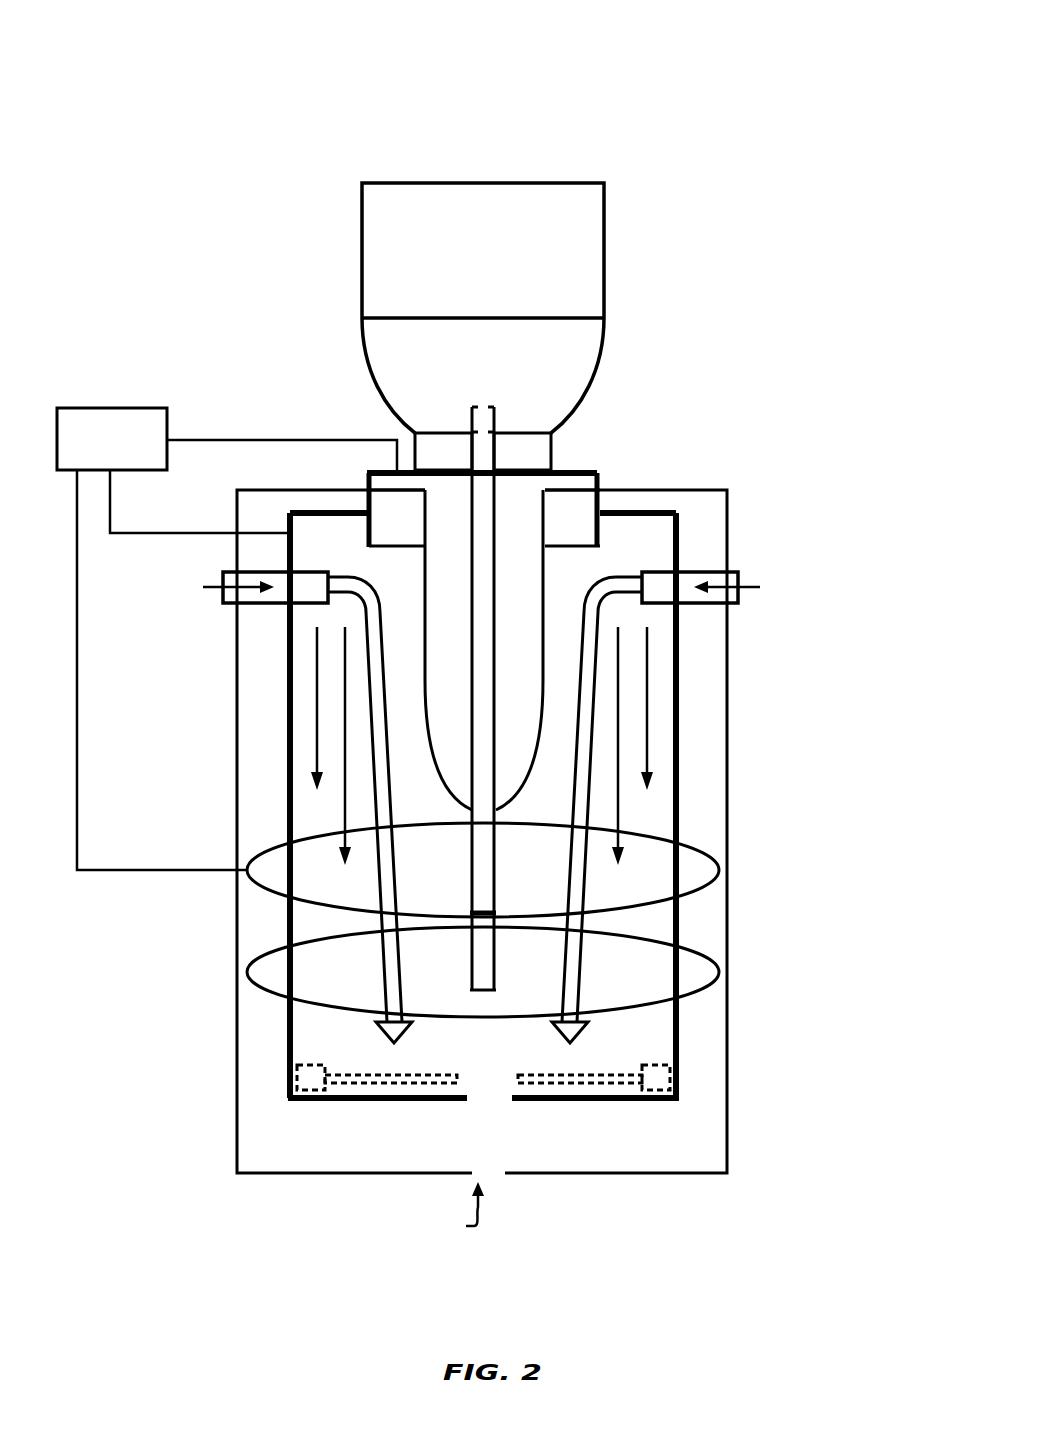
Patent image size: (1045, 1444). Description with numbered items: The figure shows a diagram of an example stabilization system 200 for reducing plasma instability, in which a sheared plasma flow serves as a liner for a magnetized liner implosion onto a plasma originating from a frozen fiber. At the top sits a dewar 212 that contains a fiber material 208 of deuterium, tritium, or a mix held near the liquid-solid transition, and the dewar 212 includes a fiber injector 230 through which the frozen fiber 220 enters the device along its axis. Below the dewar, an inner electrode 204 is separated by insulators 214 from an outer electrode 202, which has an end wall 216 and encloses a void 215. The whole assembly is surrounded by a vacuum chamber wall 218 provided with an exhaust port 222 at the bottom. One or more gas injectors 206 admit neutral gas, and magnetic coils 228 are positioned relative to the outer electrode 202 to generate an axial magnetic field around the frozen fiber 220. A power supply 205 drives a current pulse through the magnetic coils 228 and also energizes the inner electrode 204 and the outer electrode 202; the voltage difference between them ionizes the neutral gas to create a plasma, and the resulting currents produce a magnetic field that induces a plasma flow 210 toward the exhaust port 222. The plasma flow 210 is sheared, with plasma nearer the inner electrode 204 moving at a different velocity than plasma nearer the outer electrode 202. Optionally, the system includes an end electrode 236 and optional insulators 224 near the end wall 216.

The stabilization system 200 is at (146, 52).
The dewar 212 is at (443, 183).
The fiber material 208 is at (515, 318).
The fiber injector 230 is at (494, 407).
The power supply 205 is at (227, 639).
The insulators 214 is at (600, 490).
The inner electrode 204 is at (415, 567).
The gas injectors 206 is at (742, 572).
The vacuum chamber wall 218 is at (237, 732).
The void 215 is at (477, 652).
The plasma flow 210 is at (572, 873).
The magnetic coils 228 is at (455, 911).
The outer electrode 202 is at (676, 968).
The frozen fiber 220 is at (479, 992).
The end electrode 236 is at (370, 1074).
The optional insulators 224 is at (646, 1071).
The end wall 216 is at (405, 1101).
The exhaust port 222 is at (456, 1212).